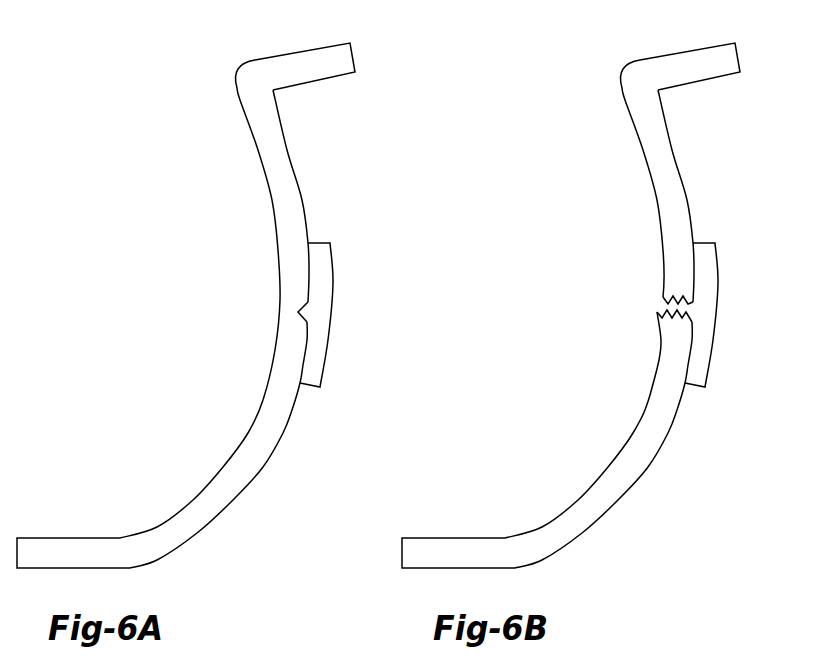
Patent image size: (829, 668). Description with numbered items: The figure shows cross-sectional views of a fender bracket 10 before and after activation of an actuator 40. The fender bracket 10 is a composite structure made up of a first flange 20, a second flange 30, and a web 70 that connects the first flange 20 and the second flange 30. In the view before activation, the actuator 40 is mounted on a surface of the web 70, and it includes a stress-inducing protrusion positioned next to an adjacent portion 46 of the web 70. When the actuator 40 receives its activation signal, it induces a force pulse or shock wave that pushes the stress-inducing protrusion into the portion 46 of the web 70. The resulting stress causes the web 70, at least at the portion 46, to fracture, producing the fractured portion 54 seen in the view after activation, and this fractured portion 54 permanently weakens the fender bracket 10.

In FIG. 6A, the fender bracket 10 is at (193, 290).
In FIG. 6B, the fender bracket 10 is at (578, 290).
In FIG. 6A, the first flange 20 is at (297, 50).
In FIG. 6B, the first flange 20 is at (682, 50).
In FIG. 6A, the second flange 30 is at (55, 538).
In FIG. 6B, the second flange 30 is at (440, 538).
In FIG. 6A, the actuator 40 is at (337, 268).
In FIG. 6B, the actuator 40 is at (723, 261).
In FIG. 6A, the portion of the web 46 is at (278, 308).
In FIG. 6B, the fractured portion 54 is at (668, 305).
In FIG. 6A, the web 70 is at (265, 132).
In FIG. 6B, the web 70 is at (650, 134).